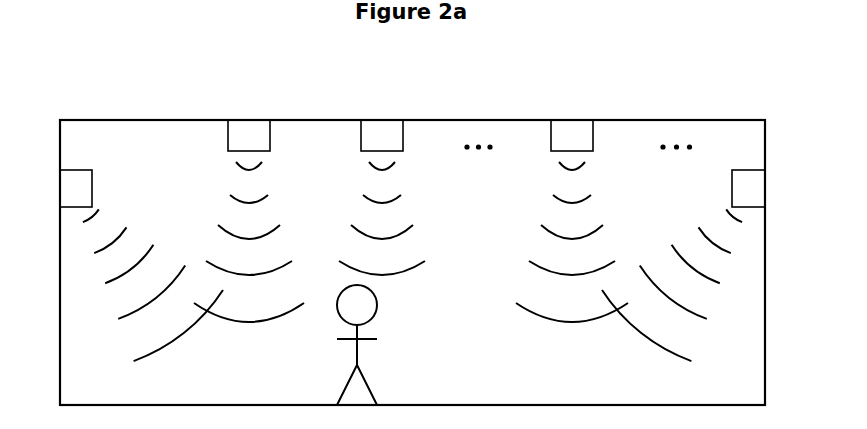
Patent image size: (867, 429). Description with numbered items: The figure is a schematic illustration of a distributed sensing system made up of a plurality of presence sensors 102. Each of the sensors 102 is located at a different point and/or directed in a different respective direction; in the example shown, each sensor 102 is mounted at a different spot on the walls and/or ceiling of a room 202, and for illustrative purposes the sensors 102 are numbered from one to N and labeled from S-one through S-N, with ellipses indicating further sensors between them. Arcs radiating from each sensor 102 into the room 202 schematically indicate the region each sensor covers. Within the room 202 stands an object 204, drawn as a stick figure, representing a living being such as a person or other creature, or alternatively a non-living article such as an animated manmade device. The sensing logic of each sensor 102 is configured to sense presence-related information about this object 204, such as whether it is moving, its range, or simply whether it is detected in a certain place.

The sensor 102 is at (93, 182).
The room 202 is at (645, 120).
The object 204 is at (378, 304).